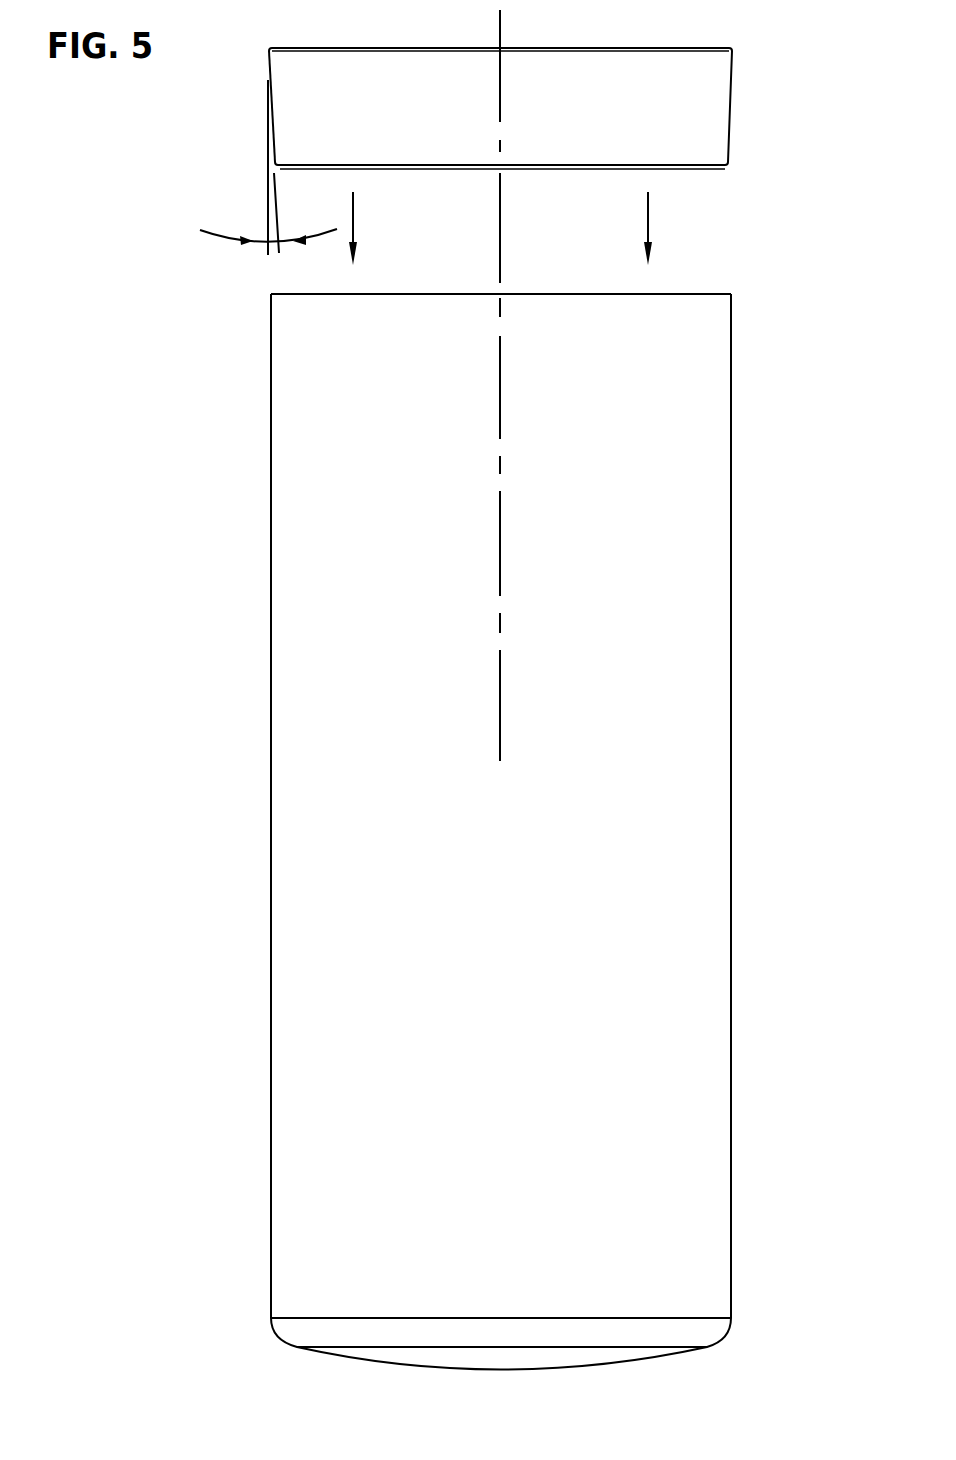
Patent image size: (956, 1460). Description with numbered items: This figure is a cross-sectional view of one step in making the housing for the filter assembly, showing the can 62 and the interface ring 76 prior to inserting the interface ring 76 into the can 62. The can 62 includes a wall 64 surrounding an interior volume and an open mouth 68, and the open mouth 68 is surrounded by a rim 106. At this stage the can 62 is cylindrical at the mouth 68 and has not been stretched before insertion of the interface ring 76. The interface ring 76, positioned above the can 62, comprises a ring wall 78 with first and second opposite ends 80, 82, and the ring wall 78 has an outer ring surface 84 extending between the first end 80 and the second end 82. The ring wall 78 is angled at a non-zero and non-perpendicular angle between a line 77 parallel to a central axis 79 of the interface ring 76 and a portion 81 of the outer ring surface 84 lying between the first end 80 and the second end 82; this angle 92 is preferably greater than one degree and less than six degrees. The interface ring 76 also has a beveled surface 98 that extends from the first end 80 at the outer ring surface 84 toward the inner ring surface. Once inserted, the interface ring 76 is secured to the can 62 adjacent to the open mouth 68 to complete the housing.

The can 62 is at (731, 582).
The wall 64 is at (270, 588).
The open mouth 68 is at (704, 293).
The interface ring 76 is at (531, 95).
The line parallel to central axis 77 is at (268, 190).
The ring wall 78 is at (729, 148).
The central axis 79 is at (505, 27).
The first end 80 is at (268, 48).
The portion of outer ring surface 81 is at (277, 145).
The second end 82 is at (280, 167).
The outer ring surface 84 is at (735, 78).
The angle 92 is at (213, 238).
The beveled surface 98 is at (718, 47).
The rim 106 is at (332, 295).